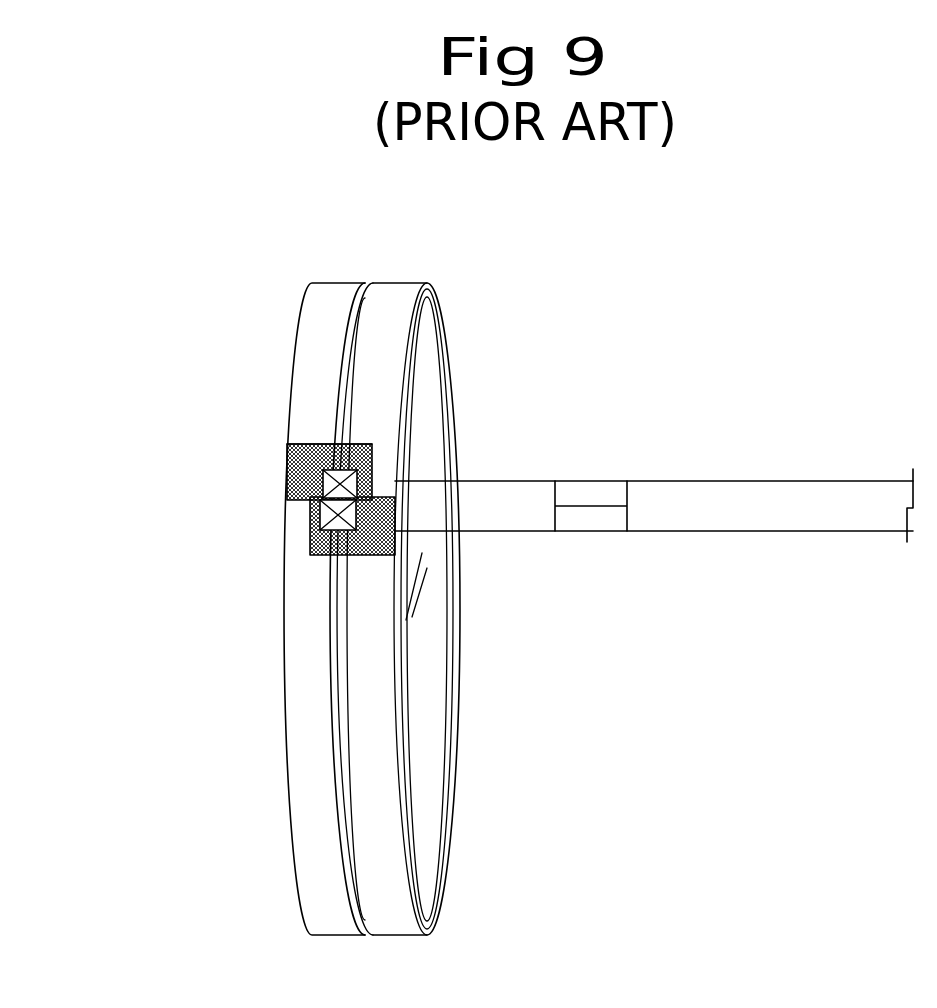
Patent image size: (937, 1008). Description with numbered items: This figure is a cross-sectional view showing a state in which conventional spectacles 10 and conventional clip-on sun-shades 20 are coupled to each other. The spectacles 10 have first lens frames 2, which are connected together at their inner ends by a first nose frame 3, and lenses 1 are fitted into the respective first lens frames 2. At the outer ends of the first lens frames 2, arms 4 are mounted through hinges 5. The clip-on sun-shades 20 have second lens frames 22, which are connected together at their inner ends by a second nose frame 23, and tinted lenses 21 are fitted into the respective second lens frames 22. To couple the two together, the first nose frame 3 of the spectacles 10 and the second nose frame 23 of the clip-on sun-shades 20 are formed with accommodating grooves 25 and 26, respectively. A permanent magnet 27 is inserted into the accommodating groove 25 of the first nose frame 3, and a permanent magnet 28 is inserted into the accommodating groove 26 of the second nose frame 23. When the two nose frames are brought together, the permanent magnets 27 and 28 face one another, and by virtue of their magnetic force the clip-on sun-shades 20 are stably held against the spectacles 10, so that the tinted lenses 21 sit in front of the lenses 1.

The spectacles 10 is at (632, 350).
The clip-on sun-shades 20 is at (256, 686).
The second lens frames 22 is at (298, 877).
The tinted lenses 21 is at (345, 778).
The first lens frames 2 is at (450, 392).
The lenses 1 is at (433, 699).
The first nose frame 3 is at (383, 528).
The second nose frame 23 is at (295, 473).
The accommodating groove 25 is at (313, 556).
The accommodating groove 26 is at (332, 468).
The permanent magnet 28 is at (322, 488).
The permanent magnet 27 is at (320, 513).
The arms 4 is at (783, 518).
The hinges 5 is at (612, 525).